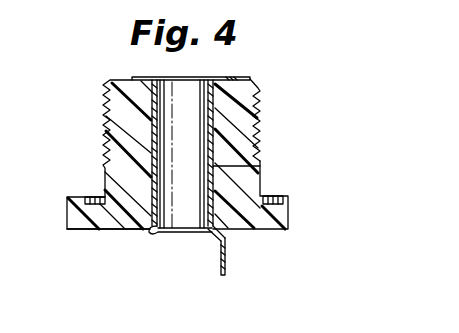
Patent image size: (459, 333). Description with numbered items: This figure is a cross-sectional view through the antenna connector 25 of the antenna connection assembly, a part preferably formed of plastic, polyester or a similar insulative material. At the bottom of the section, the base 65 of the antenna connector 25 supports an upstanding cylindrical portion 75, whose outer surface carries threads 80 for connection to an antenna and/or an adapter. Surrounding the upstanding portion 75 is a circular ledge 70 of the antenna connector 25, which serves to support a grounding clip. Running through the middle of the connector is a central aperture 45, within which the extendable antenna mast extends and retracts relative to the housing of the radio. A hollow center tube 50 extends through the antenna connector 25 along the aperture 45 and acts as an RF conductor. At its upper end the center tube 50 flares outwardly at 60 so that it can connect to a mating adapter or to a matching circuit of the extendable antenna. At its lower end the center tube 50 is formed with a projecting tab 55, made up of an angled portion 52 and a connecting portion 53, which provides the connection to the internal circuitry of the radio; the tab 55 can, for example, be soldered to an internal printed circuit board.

The antenna connector 25 is at (124, 119).
The outwardly flared upper end of center tube 60 is at (235, 77).
The threads 80 is at (260, 112).
The hollow center tube 50 is at (262, 166).
The upstanding cylindrical portion 75 is at (263, 190).
The circular ledge 70 is at (80, 195).
The base 65 is at (83, 230).
The central aperture 45 is at (187, 215).
The angled portion 52 is at (216, 239).
The connecting portion 53 is at (228, 247).
The projecting tab 55 is at (232, 274).